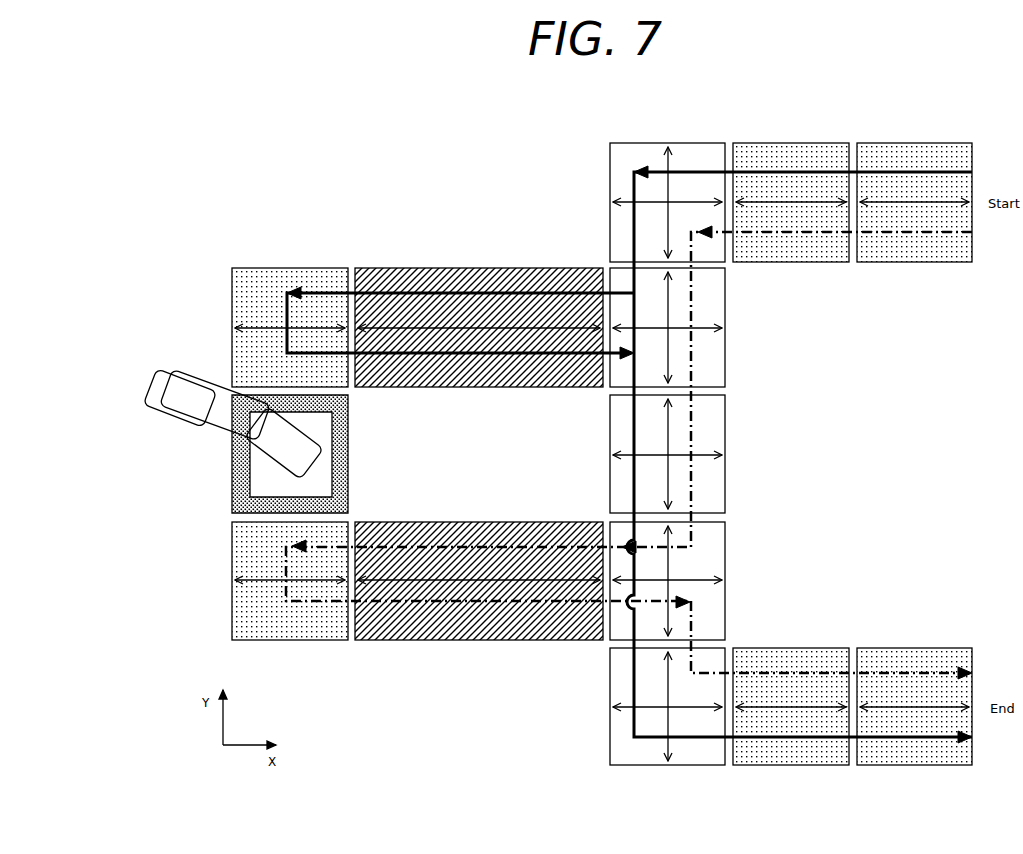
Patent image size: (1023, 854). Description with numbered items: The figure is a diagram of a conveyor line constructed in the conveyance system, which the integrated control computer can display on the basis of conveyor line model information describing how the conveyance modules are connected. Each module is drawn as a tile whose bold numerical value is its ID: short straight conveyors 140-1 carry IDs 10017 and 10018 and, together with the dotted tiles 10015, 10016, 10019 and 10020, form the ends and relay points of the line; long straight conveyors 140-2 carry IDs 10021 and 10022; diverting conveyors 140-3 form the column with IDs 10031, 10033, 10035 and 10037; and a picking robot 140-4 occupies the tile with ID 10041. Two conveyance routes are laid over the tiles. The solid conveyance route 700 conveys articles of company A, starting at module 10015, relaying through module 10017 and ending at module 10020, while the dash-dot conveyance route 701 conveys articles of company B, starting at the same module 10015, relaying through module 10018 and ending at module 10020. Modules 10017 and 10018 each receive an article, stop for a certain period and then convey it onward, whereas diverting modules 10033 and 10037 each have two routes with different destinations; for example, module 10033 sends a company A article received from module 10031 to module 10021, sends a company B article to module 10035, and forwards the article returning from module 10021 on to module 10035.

The conveyance route 700 is at (630, 237).
The conveyance route 701 is at (691, 297).
The conveyance module 140-1 is at (925, 262).
The conveyance module 140-2 is at (508, 388).
The conveyance module 140-3 is at (730, 480).
The conveyance module 140-4 is at (348, 470).
The conveyance module ID 10015 is at (764, 444).
The conveyance module ID 10016 is at (791, 192).
The conveyance module ID 10017 is at (290, 319).
The conveyance module ID 10018 is at (290, 592).
The conveyance module ID 10019 is at (791, 696).
The conveyance module ID 10020 is at (914, 696).
The conveyance module ID 10021 is at (479, 319).
The conveyance module ID 10022 is at (479, 592).
The conveyance module ID 10031 is at (667, 192).
The conveyance module ID 10033 is at (696, 327).
The conveyance module ID 10035 is at (696, 454).
The conveyance module ID 10037 is at (696, 581).
The conveyance module ID 10041 is at (317, 454).